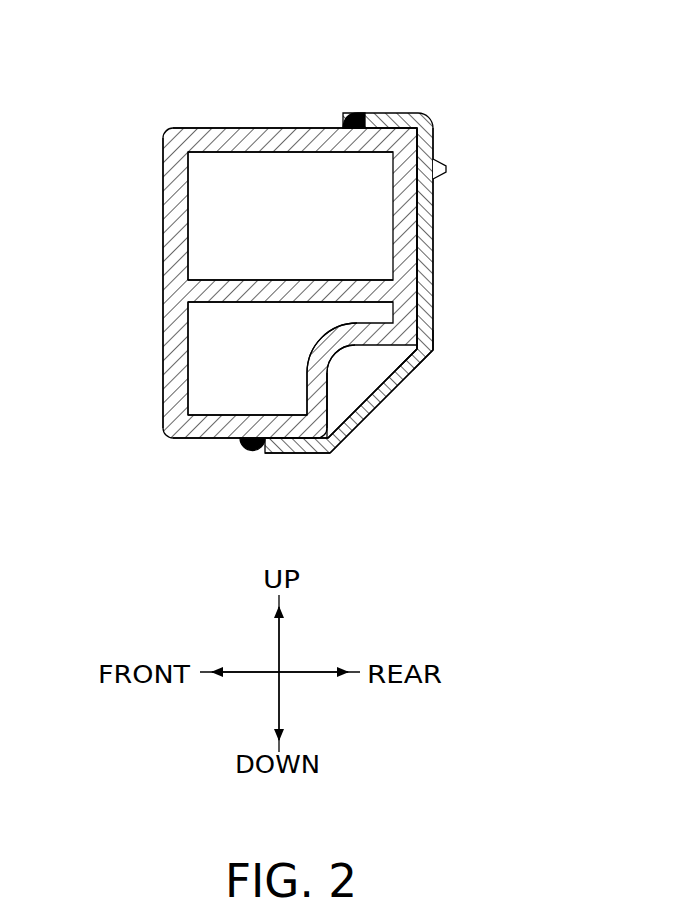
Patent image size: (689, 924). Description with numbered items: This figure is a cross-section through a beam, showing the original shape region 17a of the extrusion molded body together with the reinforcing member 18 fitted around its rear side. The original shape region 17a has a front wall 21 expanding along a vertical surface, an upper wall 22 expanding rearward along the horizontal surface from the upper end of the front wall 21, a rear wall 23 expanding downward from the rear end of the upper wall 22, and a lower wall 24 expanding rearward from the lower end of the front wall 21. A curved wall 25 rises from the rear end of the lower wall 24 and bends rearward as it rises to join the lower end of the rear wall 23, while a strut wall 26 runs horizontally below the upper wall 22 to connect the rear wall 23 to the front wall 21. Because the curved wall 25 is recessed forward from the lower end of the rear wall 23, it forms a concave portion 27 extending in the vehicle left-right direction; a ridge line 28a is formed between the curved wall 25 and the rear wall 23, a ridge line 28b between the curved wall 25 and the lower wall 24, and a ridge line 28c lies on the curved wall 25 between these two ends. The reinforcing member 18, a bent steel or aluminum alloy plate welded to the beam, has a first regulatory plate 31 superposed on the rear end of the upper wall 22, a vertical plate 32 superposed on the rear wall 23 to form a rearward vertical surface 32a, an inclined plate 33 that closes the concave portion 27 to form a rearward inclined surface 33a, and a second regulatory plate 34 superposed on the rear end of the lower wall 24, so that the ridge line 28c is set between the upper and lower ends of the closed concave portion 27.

The original shape region 17a is at (161, 123).
The reinforcing member 18 is at (439, 134).
The front wall 21 is at (162, 284).
The upper wall 22 is at (283, 128).
The rear wall 23 is at (436, 197).
The lower wall 24 is at (211, 440).
The curved wall 25 is at (309, 378).
The strut wall 26 is at (262, 280).
The concave portion 27 is at (363, 403).
The ridge line 28a is at (432, 348).
The ridge line 28b is at (332, 453).
The ridge line 28c is at (318, 345).
The first regulatory plate 31 is at (378, 113).
The vertical plate 32 is at (433, 268).
The rearward vertical surface 32a is at (420, 180).
The inclined plate 33 is at (407, 377).
The rearward inclined surface 33a is at (387, 388).
The second regulatory plate 34 is at (283, 454).